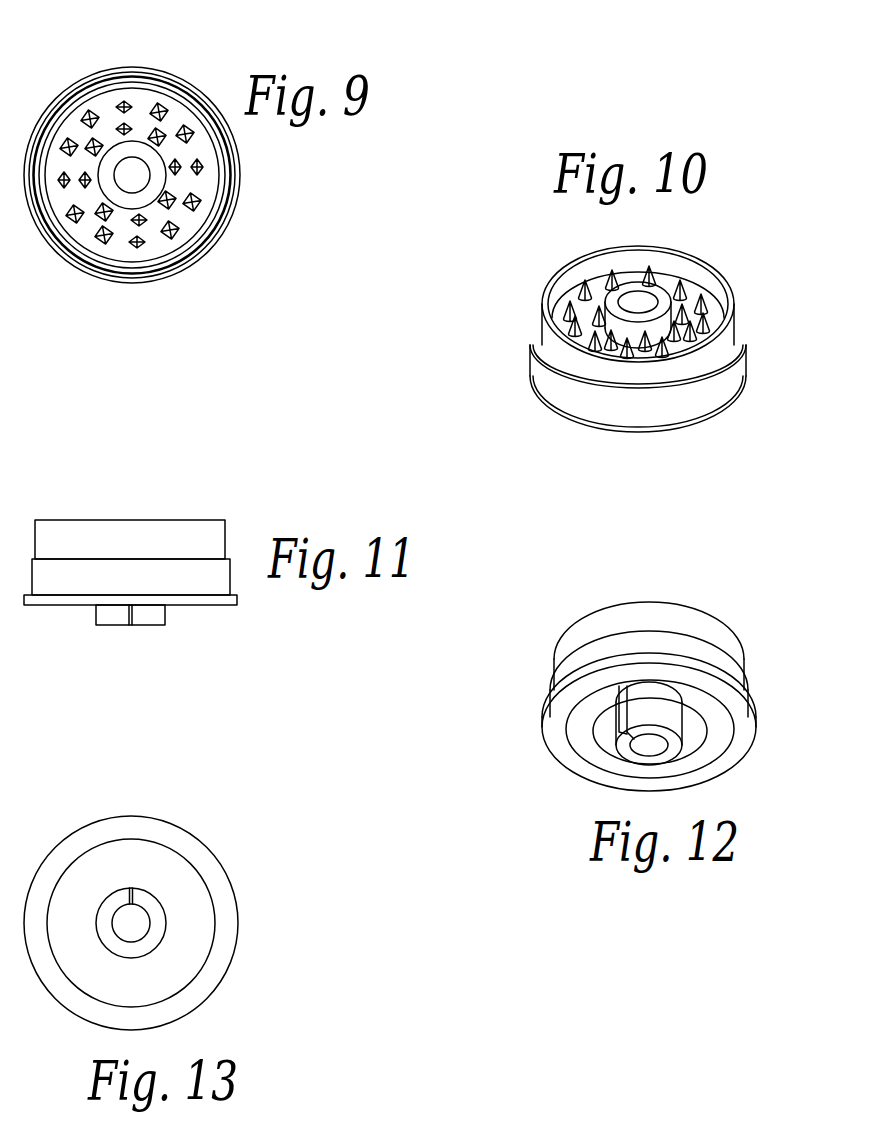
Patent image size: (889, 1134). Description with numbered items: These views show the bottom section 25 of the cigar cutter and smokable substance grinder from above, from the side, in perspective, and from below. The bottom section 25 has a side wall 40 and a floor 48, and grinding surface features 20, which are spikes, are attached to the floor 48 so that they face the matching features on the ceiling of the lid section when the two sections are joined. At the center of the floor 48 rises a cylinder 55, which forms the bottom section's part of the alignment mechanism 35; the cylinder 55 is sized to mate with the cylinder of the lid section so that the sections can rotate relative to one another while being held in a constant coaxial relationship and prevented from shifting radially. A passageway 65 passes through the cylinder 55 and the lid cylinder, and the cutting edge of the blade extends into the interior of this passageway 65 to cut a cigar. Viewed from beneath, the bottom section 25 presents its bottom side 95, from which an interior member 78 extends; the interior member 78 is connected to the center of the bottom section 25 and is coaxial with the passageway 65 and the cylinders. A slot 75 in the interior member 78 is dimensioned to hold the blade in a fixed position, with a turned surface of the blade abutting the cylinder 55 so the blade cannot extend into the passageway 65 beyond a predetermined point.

In FIG. 9, the bottom section 25 is at (171, 84).
In FIG. 10, the bottom section 25 is at (540, 375).
In FIG. 11, the bottom section 25 is at (77, 521).
In FIG. 12, the bottom section 25 is at (708, 626).
In FIG. 9, the floor 48 is at (142, 224).
In FIG. 10, the floor 48 is at (686, 284).
In FIG. 10, the alignment mechanism 35 is at (582, 274).
In FIG. 10, the grinding surface features 20 is at (576, 271).
In FIG. 10, the side wall 40 is at (714, 324).
In FIG. 10, the cylinder 55 is at (536, 297).
In FIG. 12, the interior member 78 is at (663, 684).
In FIG. 12, the bottom side 95 is at (730, 708).
In FIG. 12, the slot 75 is at (617, 701).
In FIG. 13, the slot 75 is at (124, 880).
In FIG. 12, the passageway 65 is at (637, 737).